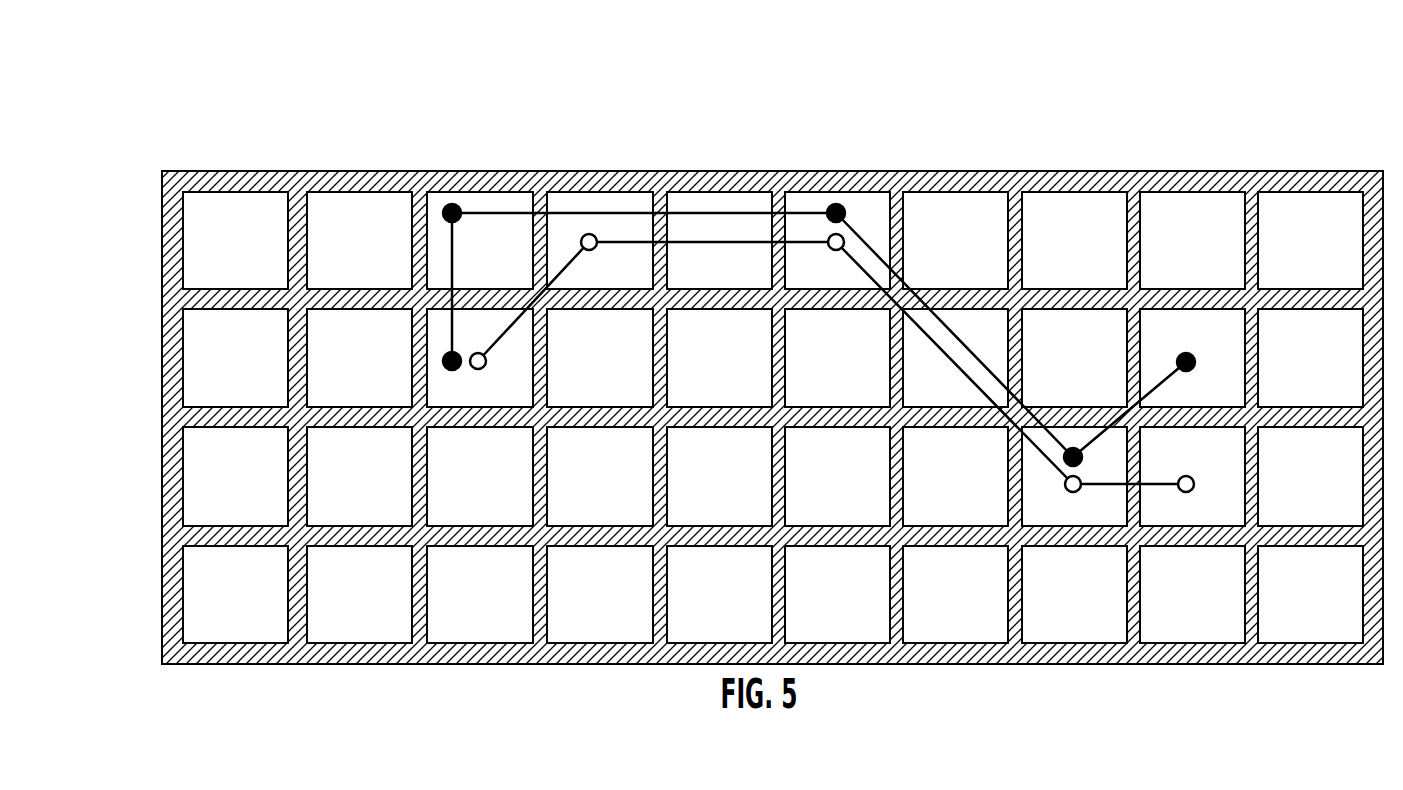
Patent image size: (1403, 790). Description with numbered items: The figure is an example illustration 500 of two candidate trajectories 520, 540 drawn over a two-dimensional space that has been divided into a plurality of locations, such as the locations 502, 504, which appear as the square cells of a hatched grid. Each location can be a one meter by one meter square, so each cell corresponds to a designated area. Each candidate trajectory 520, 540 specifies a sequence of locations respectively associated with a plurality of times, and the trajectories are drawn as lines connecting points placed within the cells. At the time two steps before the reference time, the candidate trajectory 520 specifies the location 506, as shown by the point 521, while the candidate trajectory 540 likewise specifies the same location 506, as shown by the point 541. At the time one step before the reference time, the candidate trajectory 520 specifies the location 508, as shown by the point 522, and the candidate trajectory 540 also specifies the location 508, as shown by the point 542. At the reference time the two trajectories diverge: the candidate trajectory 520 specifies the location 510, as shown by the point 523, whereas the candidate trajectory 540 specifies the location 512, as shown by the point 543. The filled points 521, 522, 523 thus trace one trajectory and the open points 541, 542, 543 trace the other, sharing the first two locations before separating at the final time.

The illustration 500 is at (740, 360).
The location 502 is at (205, 217).
The location 504 is at (210, 337).
The location 506 is at (812, 263).
The location 508 is at (1073, 503).
The location 510 is at (1162, 332).
The location 512 is at (1198, 503).
The candidate trajectory 520 is at (690, 212).
The point 521 is at (838, 206).
The point 522 is at (1074, 448).
The point 523 is at (1195, 363).
The candidate trajectory 540 is at (742, 238).
The point 541 is at (838, 251).
The point 542 is at (1064, 484).
The point 543 is at (1195, 484).